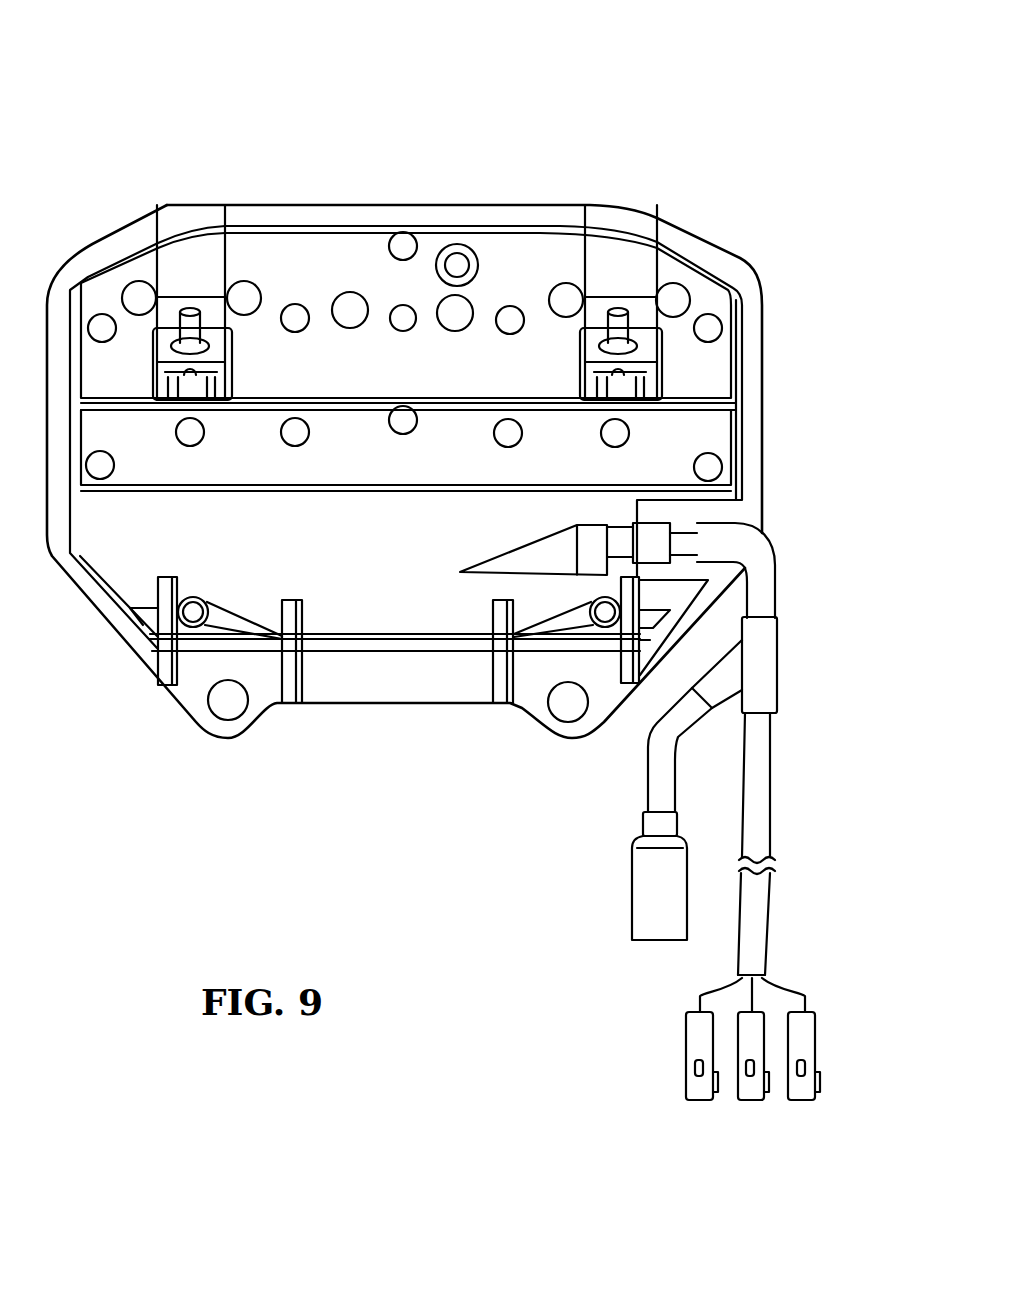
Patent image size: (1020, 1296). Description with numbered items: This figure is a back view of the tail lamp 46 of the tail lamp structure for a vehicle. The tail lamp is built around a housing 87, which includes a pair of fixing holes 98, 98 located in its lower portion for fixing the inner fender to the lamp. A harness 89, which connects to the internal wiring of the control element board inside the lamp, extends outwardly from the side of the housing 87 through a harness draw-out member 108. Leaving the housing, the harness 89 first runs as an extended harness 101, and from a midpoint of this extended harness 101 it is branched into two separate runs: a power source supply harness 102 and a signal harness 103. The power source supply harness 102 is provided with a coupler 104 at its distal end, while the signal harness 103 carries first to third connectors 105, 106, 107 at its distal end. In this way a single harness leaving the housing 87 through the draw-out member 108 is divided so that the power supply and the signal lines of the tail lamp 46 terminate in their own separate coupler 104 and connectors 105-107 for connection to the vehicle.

The pedal assembly 46 is at (172, 92).
The housing 87 is at (700, 228).
The harness 89 is at (820, 532).
The fixing holes 98 is at (230, 712).
The extended harness 101 is at (778, 597).
The power source supply harness 102 is at (645, 738).
The signal harness 103 is at (773, 764).
The coupler 104 is at (652, 943).
The first connector 105 is at (692, 1104).
The second connector 106 is at (745, 1104).
The third connector 107 is at (800, 1104).
The harness draw-out member 108 is at (782, 528).